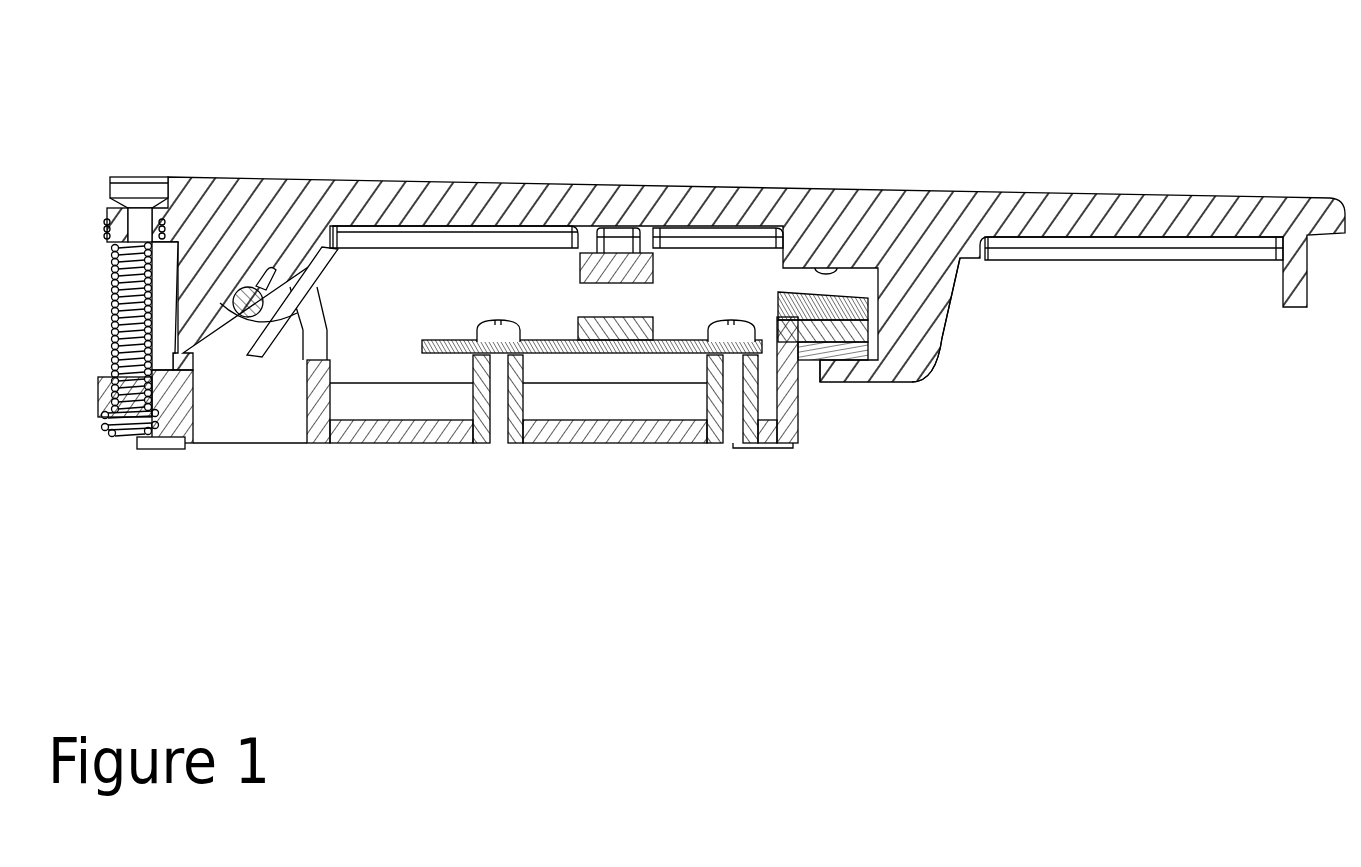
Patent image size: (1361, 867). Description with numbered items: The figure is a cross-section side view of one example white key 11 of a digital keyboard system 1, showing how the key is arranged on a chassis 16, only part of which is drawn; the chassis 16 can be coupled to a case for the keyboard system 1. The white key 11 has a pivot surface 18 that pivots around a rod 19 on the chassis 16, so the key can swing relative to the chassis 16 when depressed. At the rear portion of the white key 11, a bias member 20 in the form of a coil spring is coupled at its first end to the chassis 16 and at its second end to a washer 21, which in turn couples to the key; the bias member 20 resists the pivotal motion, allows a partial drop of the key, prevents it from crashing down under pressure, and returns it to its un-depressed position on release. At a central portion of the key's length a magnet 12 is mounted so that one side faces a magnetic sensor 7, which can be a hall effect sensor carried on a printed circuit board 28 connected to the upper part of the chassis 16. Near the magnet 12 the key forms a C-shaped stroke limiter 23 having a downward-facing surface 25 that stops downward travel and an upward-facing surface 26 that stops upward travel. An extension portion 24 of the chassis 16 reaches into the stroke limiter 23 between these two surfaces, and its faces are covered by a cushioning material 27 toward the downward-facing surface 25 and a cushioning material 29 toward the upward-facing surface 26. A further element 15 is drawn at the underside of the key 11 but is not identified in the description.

The keyboard system 1 is at (791, 110).
The magnetic sensor 7 is at (627, 353).
The white key 11 is at (1030, 196).
The magnet 12 is at (583, 266).
The support step 15 is at (973, 246).
The chassis 16 is at (193, 433).
The pivot surface 18 is at (244, 340).
The rod 19 is at (250, 287).
The bias member 20 is at (125, 312).
The washer 21 is at (110, 212).
The stroke limiter 23 is at (927, 343).
The extension portion 24 is at (778, 322).
The downward-facing surface 25 is at (835, 268).
The upward-facing surface 26 is at (852, 360).
The cushioning material 27 is at (778, 295).
The printed circuit board 28 is at (428, 340).
The cushioning material 29 is at (809, 363).